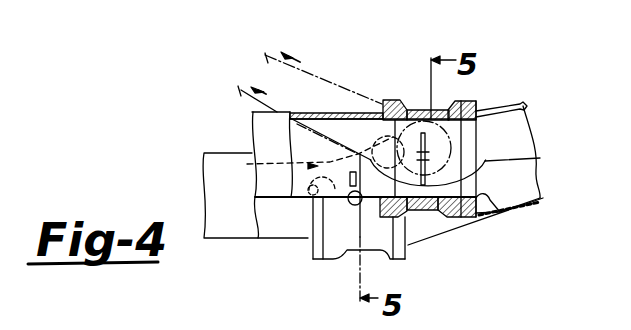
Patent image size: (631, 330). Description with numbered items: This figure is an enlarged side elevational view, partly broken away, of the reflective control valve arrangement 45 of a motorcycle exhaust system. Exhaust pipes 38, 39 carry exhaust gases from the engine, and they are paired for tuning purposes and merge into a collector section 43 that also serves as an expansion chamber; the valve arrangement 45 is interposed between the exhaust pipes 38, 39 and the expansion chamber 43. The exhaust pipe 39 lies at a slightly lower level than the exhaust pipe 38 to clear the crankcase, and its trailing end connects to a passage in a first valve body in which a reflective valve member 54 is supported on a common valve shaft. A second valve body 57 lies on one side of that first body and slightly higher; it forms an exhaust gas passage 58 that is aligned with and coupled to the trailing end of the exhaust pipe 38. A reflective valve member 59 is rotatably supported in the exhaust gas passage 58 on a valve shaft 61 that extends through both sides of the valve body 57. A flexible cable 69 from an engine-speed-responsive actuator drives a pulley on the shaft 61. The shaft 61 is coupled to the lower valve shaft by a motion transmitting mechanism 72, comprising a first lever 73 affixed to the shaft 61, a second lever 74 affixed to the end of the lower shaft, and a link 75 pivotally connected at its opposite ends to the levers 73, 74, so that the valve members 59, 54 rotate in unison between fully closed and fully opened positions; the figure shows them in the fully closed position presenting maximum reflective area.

The exhaust pipe 38 is at (259, 240).
The exhaust pipe 39 is at (207, 239).
The collector section 43 is at (543, 201).
The reflective control valve arrangement 45 is at (401, 63).
The reflective valve member 54 is at (357, 172).
The second valve body 57 is at (452, 100).
The exhaust gas passage 58 is at (487, 211).
The reflective valve member 59 is at (434, 218).
The valve shaft 61 is at (540, 158).
The flexible cable 69 is at (322, 79).
The motion transmitting mechanism 72 is at (247, 164).
The first lever 73 is at (476, 175).
The second lever 74 is at (325, 197).
The link 75 is at (330, 162).